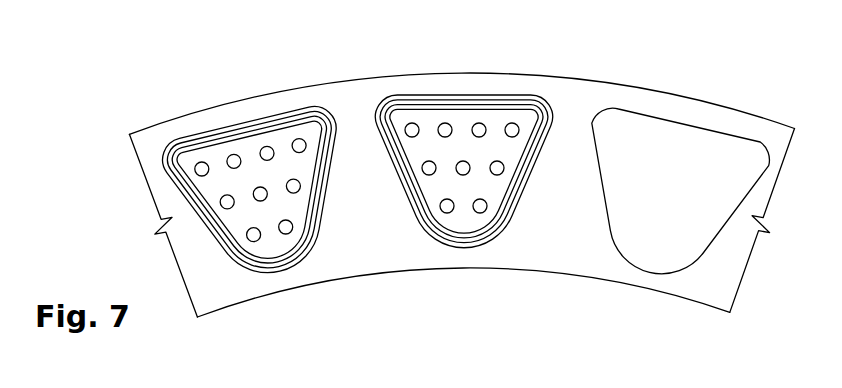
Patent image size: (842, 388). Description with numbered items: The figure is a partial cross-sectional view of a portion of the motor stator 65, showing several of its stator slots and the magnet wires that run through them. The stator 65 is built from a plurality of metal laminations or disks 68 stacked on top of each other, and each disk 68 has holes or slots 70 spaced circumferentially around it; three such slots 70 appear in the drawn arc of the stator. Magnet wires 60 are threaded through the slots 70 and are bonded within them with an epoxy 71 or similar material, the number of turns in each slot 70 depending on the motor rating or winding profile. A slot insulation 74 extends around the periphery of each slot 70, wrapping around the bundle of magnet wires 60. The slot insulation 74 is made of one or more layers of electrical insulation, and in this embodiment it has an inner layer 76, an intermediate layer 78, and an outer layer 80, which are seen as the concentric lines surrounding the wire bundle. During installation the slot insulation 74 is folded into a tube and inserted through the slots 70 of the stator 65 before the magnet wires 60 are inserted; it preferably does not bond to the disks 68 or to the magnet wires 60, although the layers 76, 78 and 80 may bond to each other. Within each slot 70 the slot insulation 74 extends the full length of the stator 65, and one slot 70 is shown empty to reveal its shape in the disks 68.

The magnet wires 60 is at (253, 190).
The stator 65 is at (628, 287).
The metal laminations or disks 68 is at (461, 208).
The slots 70 is at (700, 128).
The epoxy 71 is at (214, 232).
The slot insulation 74 is at (436, 170).
The inner layer 76 is at (447, 237).
The intermediate layer 78 is at (397, 97).
The outer layer 80 is at (500, 98).